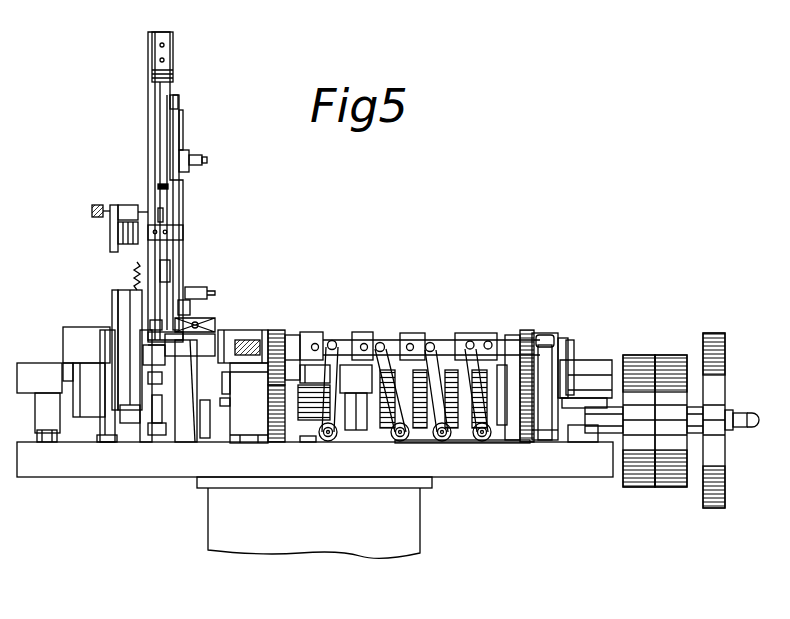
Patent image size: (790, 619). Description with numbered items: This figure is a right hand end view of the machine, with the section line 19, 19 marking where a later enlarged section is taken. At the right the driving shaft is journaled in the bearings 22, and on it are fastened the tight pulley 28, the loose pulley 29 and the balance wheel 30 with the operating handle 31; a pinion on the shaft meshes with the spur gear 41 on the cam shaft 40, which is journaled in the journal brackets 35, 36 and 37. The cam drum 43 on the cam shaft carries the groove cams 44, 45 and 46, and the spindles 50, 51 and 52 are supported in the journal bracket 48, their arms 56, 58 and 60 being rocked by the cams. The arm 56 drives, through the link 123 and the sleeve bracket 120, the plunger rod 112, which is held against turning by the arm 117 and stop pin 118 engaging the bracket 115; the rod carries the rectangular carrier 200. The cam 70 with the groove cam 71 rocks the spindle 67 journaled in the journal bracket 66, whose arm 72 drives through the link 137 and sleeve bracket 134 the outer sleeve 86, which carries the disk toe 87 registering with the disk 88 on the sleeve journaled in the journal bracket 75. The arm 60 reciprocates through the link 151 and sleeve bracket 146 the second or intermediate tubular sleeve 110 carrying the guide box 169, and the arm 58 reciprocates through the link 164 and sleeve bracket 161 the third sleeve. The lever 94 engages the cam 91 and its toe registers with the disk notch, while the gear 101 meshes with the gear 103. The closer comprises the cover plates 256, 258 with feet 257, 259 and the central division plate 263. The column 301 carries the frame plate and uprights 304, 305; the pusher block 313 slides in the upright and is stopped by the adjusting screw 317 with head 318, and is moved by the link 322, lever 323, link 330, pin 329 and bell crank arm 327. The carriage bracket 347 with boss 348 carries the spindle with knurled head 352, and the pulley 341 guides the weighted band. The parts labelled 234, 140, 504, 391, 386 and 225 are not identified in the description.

The section line 19 19 is at (146, 512).
The upright 304 is at (150, 121).
The pusher block 313 is at (165, 48).
The link 322 is at (178, 99).
The upright 305 is at (165, 118).
The lever 323 is at (177, 130).
The head 318 is at (157, 186).
The adjusting screw 317 is at (168, 186).
The link 330 is at (183, 218).
The boss 348 is at (126, 199).
The knurled head 352 is at (92, 211).
The bracket 347 is at (112, 240).
The pulley 341 is at (134, 240).
The central division plate 263 is at (130, 300).
The cover plate 256 is at (114, 298).
The cover plate 258 is at (126, 311).
The pin 329 is at (222, 284).
The bell crank arm 327 is at (190, 308).
The cross plate 234 is at (195, 326).
The small block 140 is at (156, 330).
The second or intermediate tubular sleeve 110 is at (181, 345).
The hollow rectangular guide box 169 is at (156, 355).
The rectangular carrier 200 is at (86, 345).
The journal bracket 37 is at (39, 402).
The cam shaft 40 is at (68, 384).
The block 504 is at (96, 416).
The foot 257 is at (110, 442).
The foot 259 is at (145, 442).
The bracket 391 is at (160, 387).
The bracket 386 is at (159, 415).
The column 301 is at (186, 442).
The stop 225 is at (210, 408).
The disk toe 87 is at (218, 332).
The disk 88 is at (230, 340).
The journal bracket 75 is at (249, 403).
The cam 91 is at (230, 378).
The lever 94 is at (231, 402).
The gear 103 is at (277, 330).
The gear 101 is at (276, 442).
The outer sleeve 86 is at (292, 340).
The sleeve bracket 134 is at (315, 332).
The link 137 is at (335, 341).
The arm 72 is at (328, 389).
The groove cam 71 is at (315, 374).
The cam 70 is at (307, 395).
The journal bracket 66 is at (303, 446).
The spindle 67 is at (330, 442).
The sleeve bracket 146 is at (362, 332).
The link 151 is at (380, 343).
The journal bracket 36 is at (356, 397).
The arm 60 is at (390, 390).
The spindle 52 is at (400, 442).
The groove cam 46 is at (398, 399).
The sleeve bracket 161 is at (410, 333).
The link 164 is at (430, 343).
The cam drum 43 is at (431, 391).
The arm 56 is at (429, 399).
The groove cam 45 is at (451, 399).
The spindle 51 is at (442, 442).
The journal bracket 48 is at (462, 446).
The link 123 is at (468, 340).
The sleeve bracket 120 is at (490, 340).
The arm 58 is at (477, 390).
The groove cam 44 is at (486, 399).
The spindle 50 is at (483, 442).
The stop pin 118 is at (513, 395).
The plunger rod 112 is at (515, 336).
The spur gear 41 is at (541, 333).
The bracket 115 is at (560, 340).
The arm 117 is at (571, 348).
The journal bracket 35 is at (580, 440).
The bearings 22 is at (556, 440).
The tight pulley 28 is at (638, 356).
The loose pulley 29 is at (672, 356).
The balance wheel 30 is at (716, 334).
The operating handle 31 is at (745, 413).